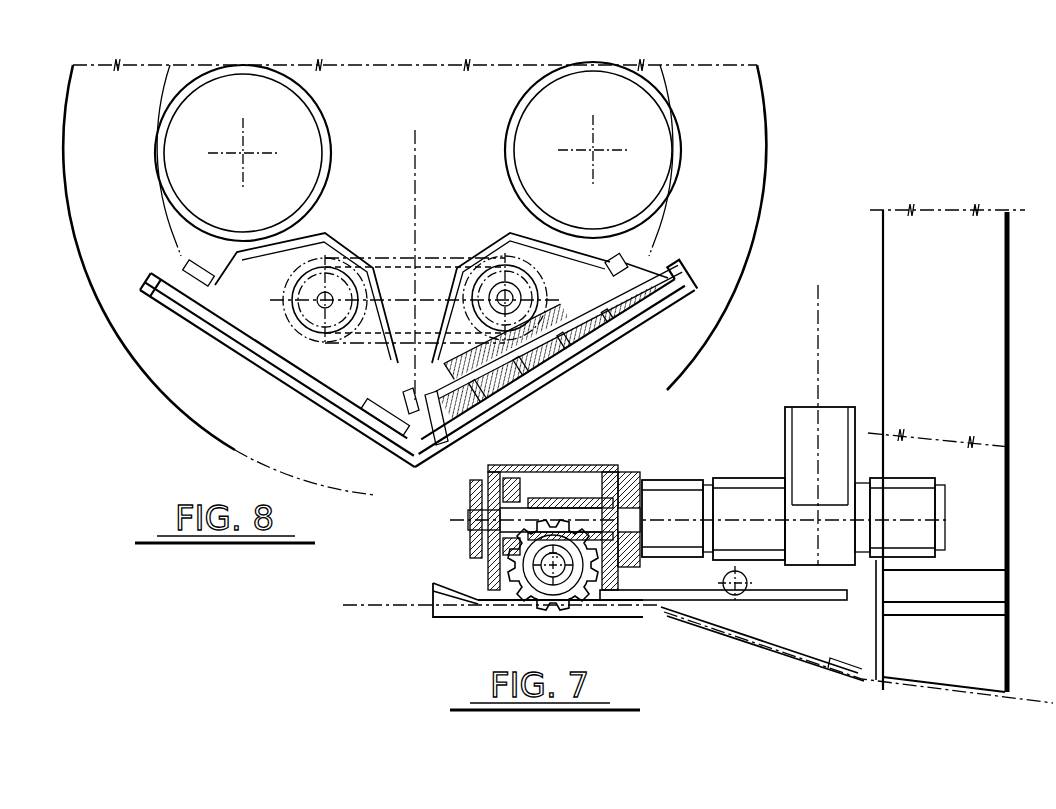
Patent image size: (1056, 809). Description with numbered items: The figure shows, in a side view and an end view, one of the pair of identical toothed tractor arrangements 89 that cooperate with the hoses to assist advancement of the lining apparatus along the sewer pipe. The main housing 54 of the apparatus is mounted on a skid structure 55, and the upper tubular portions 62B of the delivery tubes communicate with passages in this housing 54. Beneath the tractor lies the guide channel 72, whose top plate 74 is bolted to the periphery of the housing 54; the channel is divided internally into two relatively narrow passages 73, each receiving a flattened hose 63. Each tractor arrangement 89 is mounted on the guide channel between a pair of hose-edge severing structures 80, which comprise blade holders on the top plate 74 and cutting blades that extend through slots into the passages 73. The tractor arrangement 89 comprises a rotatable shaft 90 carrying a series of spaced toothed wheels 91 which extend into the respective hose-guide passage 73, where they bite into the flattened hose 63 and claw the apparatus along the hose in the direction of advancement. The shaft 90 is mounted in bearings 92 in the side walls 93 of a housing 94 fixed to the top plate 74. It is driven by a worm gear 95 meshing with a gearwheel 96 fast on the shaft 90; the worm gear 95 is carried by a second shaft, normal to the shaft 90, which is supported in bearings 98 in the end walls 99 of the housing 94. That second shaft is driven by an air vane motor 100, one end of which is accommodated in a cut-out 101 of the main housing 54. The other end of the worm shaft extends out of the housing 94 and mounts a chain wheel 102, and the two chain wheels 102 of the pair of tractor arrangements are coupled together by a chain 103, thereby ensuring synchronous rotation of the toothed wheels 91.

In FIG. 8, the upper tubular portion 62B is at (332, 100).
In FIG. 8, the guide channel 72 is at (177, 318).
In FIG. 8, the hose-edge severing structure 80 is at (192, 275).
In FIG. 8, the toothed tractor arrangement 89 is at (445, 268).
In FIG. 8, the bearings 92 is at (650, 270).
In FIG. 8, the side walls 93 is at (667, 240).
In FIG. 8, the housing 94 is at (495, 253).
In FIG. 8, the worm gear 95 is at (513, 280).
In FIG. 7, the worm gear 95 is at (560, 500).
In FIG. 8, the gearwheel 96 is at (530, 280).
In FIG. 7, the bearings 98 is at (512, 487).
In FIG. 7, the end walls 99 is at (497, 477).
In FIG. 7, the air vane motor 100 is at (740, 503).
In FIG. 7, the cut-out 101 is at (968, 520).
In FIG. 8, the chain wheel 102 is at (466, 282).
In FIG. 7, the chain wheel 102 is at (470, 495).
In FIG. 8, the chain 103 is at (405, 278).
In FIG. 7, the rotatable shaft 90 is at (555, 567).
In FIG. 7, the toothed wheels 91 is at (587, 582).
In FIG. 7, the top plate 74 is at (460, 583).
In FIG. 7, the passage 73 is at (455, 600).
In FIG. 7, the hose 63 is at (400, 608).
In FIG. 7, the main housing 54 is at (947, 403).
In FIG. 7, the skid structure 55 is at (860, 687).